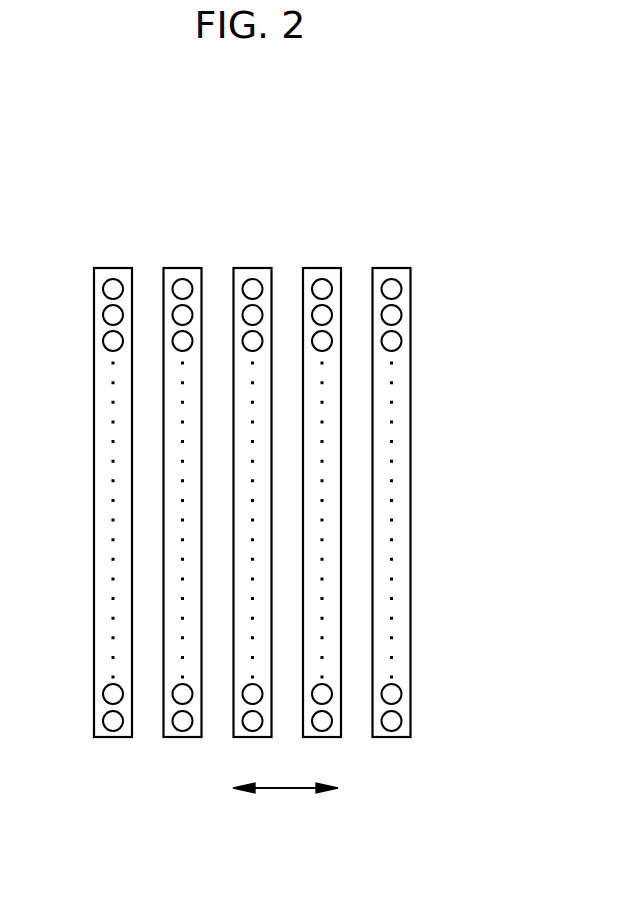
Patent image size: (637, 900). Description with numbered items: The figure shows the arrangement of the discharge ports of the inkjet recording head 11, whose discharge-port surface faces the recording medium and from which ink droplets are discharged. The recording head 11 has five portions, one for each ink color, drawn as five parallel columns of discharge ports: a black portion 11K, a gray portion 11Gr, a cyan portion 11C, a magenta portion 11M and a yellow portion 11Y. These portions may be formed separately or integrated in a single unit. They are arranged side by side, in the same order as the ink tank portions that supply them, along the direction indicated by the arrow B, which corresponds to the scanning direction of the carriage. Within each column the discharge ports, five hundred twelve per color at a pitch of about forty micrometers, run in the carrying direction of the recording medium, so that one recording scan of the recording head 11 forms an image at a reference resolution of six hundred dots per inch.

The recording head 11 is at (93, 174).
The black discharge port array of the recording head 11K is at (113, 268).
The gray discharge port array of the recording head 11Gr is at (183, 268).
The cyan discharge port array of the recording head 11C is at (253, 268).
The magenta discharge port array of the recording head 11M is at (322, 268).
The yellow discharge port array of the recording head 11Y is at (392, 268).
The arrow indicating the scanning direction B is at (285, 800).